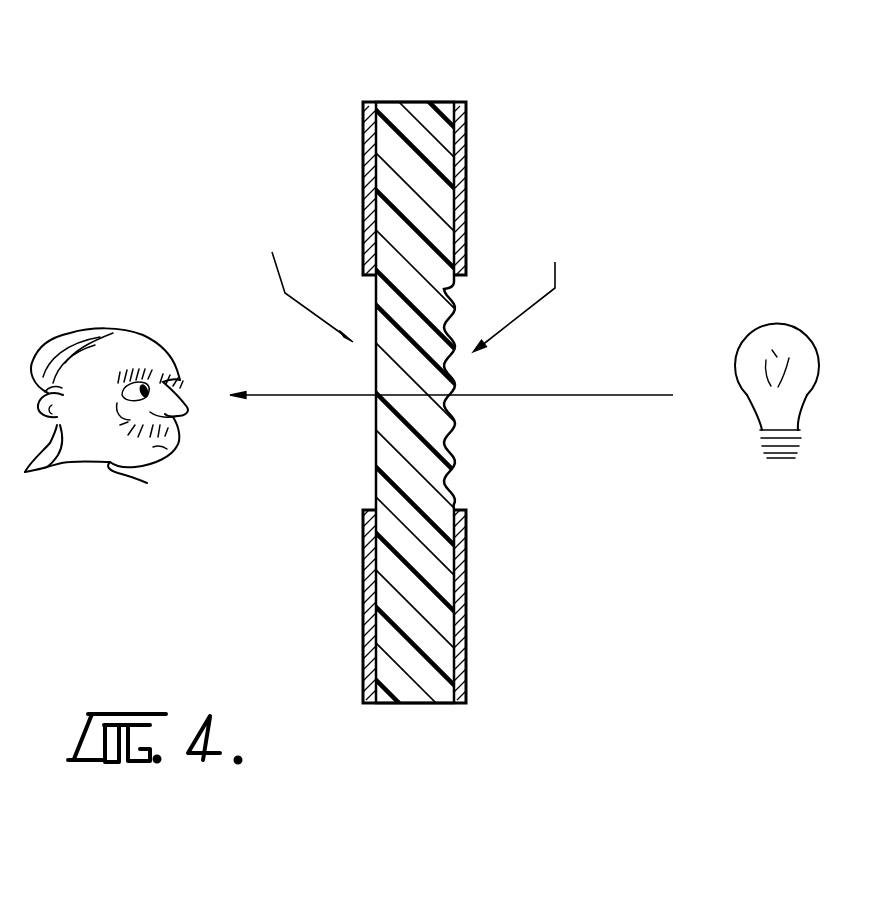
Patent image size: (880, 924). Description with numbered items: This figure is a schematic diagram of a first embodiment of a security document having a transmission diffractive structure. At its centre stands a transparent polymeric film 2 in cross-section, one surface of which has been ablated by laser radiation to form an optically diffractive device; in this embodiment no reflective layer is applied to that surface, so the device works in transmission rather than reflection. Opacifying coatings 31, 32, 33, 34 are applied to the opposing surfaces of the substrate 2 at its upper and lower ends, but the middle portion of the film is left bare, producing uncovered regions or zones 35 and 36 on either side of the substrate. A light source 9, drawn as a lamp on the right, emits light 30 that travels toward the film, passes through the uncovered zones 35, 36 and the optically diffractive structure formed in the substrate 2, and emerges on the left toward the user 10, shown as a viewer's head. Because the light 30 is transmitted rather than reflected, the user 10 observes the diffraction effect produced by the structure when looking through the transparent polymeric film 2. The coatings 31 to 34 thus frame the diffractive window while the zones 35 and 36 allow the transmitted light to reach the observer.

The transparent polymeric film 2 is at (413, 127).
The light source 9 is at (762, 440).
The user 10 is at (167, 450).
The light 30 is at (566, 397).
The opacifying coating 31 is at (466, 163).
The opacifying coating 32 is at (468, 627).
The opacifying coating 33 is at (363, 604).
The opacifying coating 34 is at (363, 140).
The uncovered zone 35 is at (531, 287).
The uncovered zone 36 is at (293, 282).